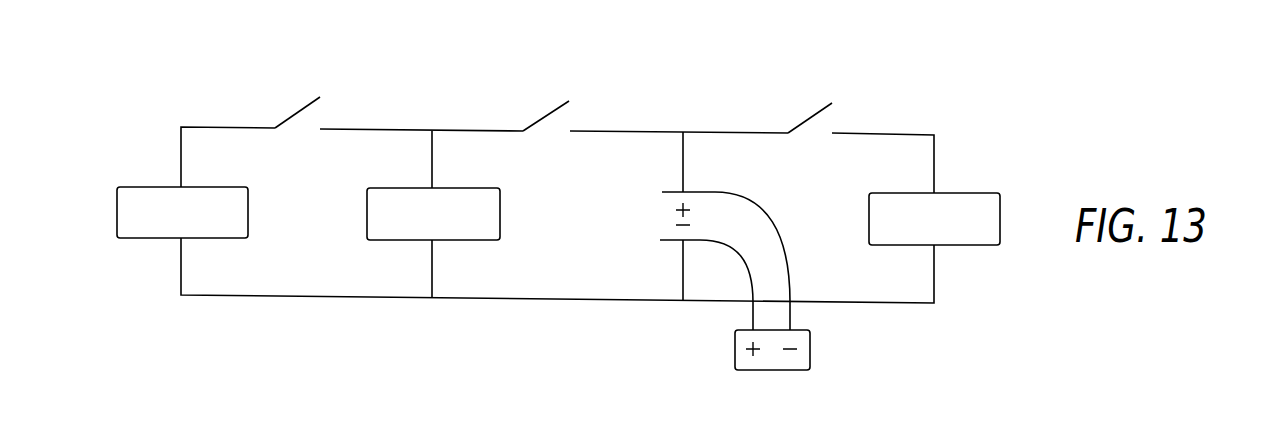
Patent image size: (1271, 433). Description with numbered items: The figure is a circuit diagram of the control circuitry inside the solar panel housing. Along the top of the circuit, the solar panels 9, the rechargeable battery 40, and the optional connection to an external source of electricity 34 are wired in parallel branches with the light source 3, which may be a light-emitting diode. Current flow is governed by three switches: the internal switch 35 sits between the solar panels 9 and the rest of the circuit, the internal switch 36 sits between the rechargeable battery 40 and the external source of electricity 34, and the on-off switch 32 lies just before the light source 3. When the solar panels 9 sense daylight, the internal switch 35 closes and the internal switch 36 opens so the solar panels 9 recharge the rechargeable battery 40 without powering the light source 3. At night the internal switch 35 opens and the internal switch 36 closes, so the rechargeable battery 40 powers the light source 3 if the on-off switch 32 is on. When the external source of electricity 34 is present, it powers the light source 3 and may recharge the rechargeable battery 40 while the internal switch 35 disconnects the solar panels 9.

The solar panels 9 is at (140, 187).
The rechargeable battery 40 is at (399, 188).
The light source 3 is at (975, 193).
The internal switch 35 is at (298, 102).
The internal switch 36 is at (543, 105).
The on-off switch 32 is at (808, 108).
The external source of electricity 34 is at (668, 192).